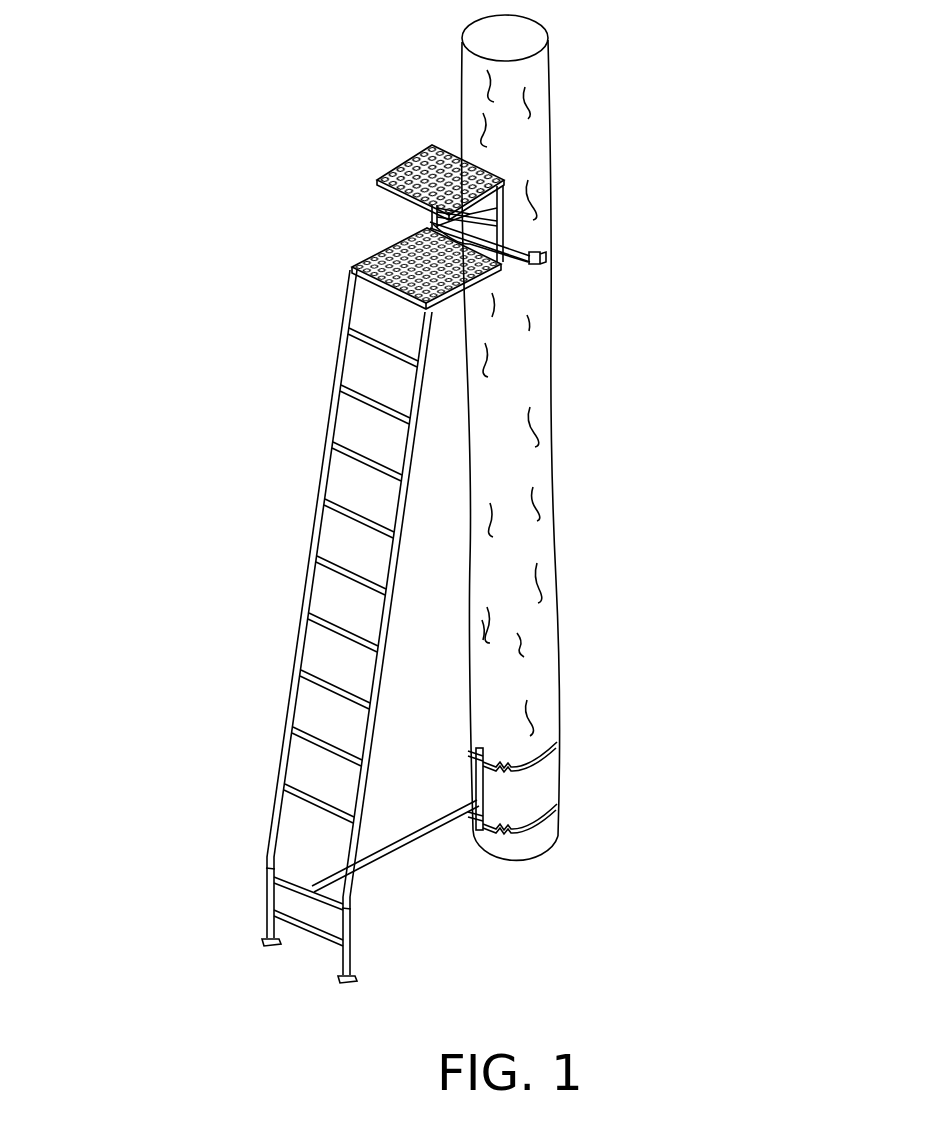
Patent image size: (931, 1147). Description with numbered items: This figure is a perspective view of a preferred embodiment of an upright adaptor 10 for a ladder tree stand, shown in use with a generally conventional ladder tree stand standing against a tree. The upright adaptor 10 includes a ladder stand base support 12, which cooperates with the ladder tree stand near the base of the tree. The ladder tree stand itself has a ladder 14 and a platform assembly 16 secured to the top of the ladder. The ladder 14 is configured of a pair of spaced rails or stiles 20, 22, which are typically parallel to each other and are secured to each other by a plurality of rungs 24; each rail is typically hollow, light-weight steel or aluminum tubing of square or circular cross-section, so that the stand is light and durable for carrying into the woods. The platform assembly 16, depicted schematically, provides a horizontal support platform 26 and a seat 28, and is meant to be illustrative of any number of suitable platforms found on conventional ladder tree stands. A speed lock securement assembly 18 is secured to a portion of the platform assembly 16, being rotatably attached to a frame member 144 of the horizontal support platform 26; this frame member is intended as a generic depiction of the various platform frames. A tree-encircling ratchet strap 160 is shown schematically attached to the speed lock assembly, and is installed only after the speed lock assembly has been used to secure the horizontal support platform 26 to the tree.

The upright adaptor 10 is at (192, 461).
The ladder stand base support 12 is at (408, 924).
The ladder 14 is at (270, 613).
The platform assembly 16 is at (362, 200).
The speed lock securement assembly 18 is at (632, 248).
The ladder rail or stile 20 is at (371, 748).
The ladder rail or stile 22 is at (288, 696).
The rung 24 is at (341, 562).
The horizontal support platform 26 is at (367, 263).
The seat 28 is at (395, 167).
The frame member 144 is at (478, 272).
The ratchet strap 160 is at (539, 249).